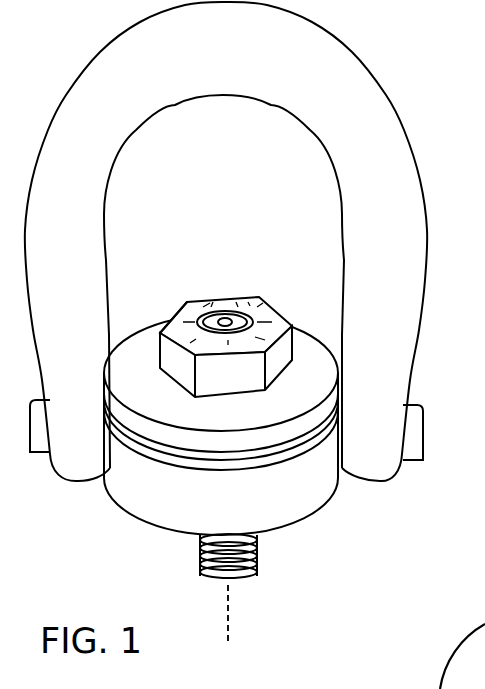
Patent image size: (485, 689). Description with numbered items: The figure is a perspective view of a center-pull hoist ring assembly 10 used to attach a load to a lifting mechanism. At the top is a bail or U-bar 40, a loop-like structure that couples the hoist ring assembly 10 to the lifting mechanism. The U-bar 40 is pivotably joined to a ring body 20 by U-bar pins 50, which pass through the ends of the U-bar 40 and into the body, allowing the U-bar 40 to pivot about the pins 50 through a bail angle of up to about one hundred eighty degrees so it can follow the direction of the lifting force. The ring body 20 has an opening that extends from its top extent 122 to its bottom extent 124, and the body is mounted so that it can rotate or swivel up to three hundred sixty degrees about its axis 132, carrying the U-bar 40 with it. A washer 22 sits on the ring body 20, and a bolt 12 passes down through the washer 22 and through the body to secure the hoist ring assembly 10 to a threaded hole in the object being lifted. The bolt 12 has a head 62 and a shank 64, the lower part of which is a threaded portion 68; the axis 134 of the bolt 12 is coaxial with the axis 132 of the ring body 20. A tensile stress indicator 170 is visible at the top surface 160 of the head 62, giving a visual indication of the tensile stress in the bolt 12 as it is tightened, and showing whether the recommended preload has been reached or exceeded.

The hoist ring assembly 10 is at (416, 99).
The bail or U-bar 40 is at (402, 185).
The U-bar pins 50 is at (36, 454).
The ring body 20 is at (315, 505).
The washer 22 is at (184, 418).
The top extent 122 is at (197, 458).
The bottom extent 124 is at (291, 536).
The bolt 12 is at (276, 293).
The head 62 is at (200, 301).
The tensile stress indicator 170 is at (237, 300).
The top surface 160 is at (172, 318).
The shank 64 is at (195, 576).
The threaded portion 68 is at (257, 568).
The axis 132 is at (233, 627).
The axis 134 is at (293, 621).